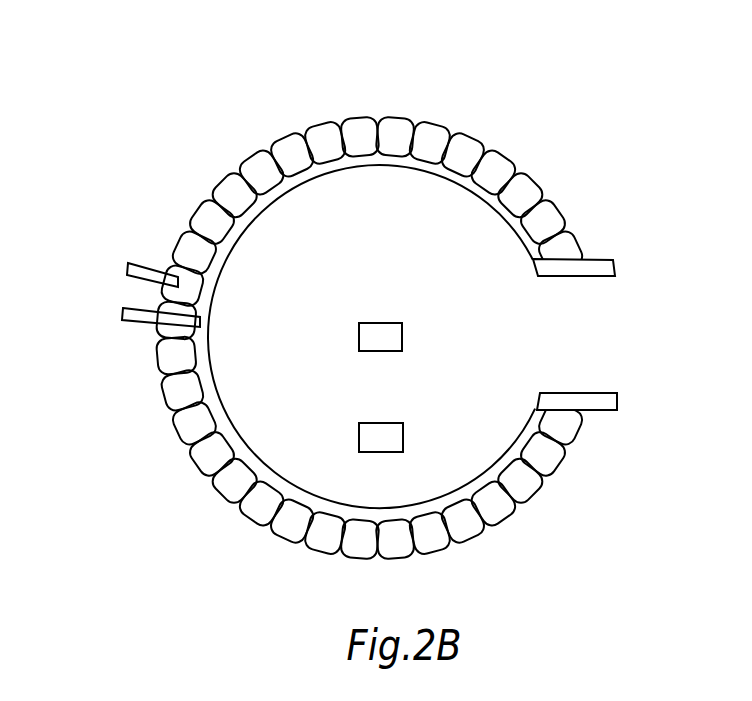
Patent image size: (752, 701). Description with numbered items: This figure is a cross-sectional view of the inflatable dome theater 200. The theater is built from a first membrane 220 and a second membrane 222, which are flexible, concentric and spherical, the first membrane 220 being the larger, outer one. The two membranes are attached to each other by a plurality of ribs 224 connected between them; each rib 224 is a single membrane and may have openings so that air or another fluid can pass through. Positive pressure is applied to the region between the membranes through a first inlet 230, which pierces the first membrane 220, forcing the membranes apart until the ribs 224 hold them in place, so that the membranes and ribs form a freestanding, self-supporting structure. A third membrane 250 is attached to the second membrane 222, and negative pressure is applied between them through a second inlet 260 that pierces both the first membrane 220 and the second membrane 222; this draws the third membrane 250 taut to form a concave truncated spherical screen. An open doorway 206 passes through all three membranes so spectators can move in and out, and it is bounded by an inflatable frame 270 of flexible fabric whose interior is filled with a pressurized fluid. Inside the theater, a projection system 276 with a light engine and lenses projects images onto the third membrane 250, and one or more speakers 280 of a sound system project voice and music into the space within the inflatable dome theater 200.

The inflatable dome theater 200 is at (112, 132).
The open doorway 206 is at (582, 338).
The first membrane 220 is at (180, 431).
The second membrane 222 is at (515, 467).
The ribs 224 is at (255, 172).
The first inlet 230 is at (142, 263).
The third membrane 250 is at (379, 168).
The second inlet 260 is at (124, 324).
The inflatable frame 270 is at (616, 267).
The projection system 276 is at (380, 322).
The speakers 280 is at (380, 422).